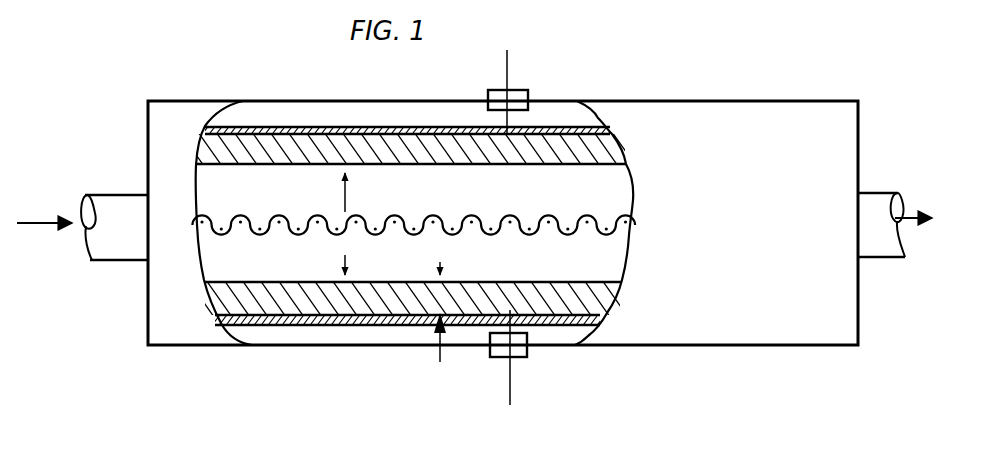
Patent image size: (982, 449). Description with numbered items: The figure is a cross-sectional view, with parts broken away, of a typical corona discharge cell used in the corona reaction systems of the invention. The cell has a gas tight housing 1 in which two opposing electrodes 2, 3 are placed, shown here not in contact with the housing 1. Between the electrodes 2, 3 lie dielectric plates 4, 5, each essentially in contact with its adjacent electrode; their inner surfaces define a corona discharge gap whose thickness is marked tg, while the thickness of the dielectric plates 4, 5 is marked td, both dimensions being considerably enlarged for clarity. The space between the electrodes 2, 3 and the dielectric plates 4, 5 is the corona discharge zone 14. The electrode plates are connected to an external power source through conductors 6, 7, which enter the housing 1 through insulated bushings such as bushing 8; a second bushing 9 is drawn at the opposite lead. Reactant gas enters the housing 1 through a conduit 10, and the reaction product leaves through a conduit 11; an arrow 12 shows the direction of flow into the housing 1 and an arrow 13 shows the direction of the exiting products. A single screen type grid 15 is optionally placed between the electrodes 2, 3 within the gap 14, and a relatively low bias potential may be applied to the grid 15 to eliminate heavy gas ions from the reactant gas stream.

The housing 1 is at (683, 121).
The electrode 2 is at (279, 128).
The electrode 3 is at (302, 327).
The dielectric plate 4 is at (347, 135).
The dielectric plate 5 is at (385, 304).
The conductor 6 is at (508, 65).
The conductor 7 is at (510, 378).
The insulated bushing 8 is at (517, 98).
The lower terminal 9 is at (507, 345).
The conduit 10 is at (115, 230).
The conduit 11 is at (881, 233).
The arrow 12 is at (36, 223).
The arrow 13 is at (916, 212).
The corona discharge zone 14 is at (566, 203).
The grid 15 is at (247, 231).